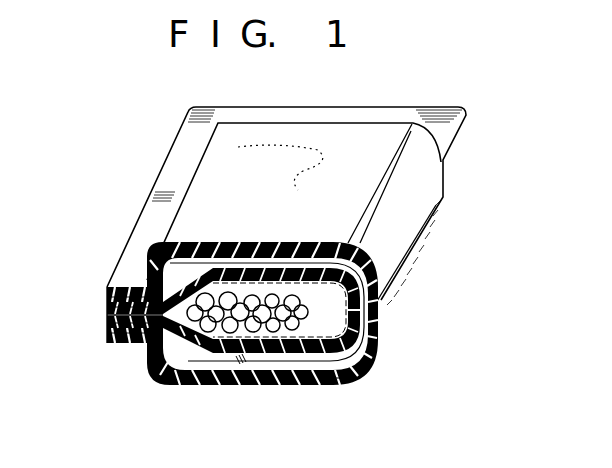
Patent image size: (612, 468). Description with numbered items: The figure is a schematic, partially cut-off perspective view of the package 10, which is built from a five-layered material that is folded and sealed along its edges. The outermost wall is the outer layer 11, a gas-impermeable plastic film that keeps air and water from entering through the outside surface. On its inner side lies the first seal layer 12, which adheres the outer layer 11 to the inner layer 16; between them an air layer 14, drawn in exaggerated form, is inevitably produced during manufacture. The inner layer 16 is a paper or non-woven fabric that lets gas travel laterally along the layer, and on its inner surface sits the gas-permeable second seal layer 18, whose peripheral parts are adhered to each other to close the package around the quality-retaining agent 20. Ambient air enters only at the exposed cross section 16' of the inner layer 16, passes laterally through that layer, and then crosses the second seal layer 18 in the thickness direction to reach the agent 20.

The package 10 is at (458, 250).
The outer layer 11 is at (379, 298).
The first seal layer 12 is at (378, 333).
The air layer 14 is at (258, 356).
The inner layer 16 is at (357, 401).
The exposed cross section 16' is at (96, 315).
The second seal layer 18 is at (300, 352).
The quality-retaining agent 20 is at (210, 326).